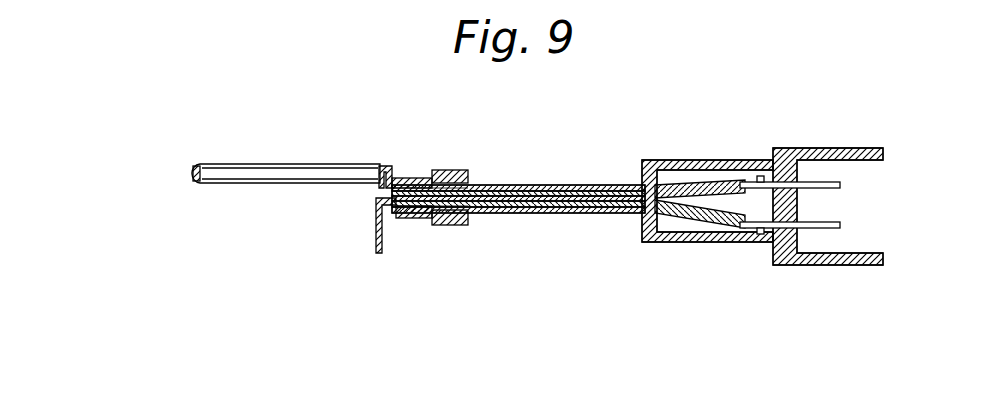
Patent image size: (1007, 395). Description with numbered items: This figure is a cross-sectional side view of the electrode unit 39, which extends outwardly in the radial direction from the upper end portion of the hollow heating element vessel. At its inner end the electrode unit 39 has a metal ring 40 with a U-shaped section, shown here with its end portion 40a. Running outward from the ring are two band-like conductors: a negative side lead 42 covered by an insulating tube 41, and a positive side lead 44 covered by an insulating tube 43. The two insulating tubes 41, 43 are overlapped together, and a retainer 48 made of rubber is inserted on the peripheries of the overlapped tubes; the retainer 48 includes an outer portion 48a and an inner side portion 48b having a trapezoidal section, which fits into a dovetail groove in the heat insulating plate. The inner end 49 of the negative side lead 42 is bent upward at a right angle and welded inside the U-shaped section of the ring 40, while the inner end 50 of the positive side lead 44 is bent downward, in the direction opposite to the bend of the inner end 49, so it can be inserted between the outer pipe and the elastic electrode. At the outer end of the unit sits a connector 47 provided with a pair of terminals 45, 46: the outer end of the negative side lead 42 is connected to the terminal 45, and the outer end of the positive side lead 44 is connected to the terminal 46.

The electrode unit 39 is at (586, 179).
The metal ring 40 is at (233, 170).
The tube end cap 40a is at (190, 171).
The insulating tube 41 is at (528, 185).
The negative side lead 42 is at (492, 188).
The insulating tube 43 is at (548, 213).
The positive side lead 44 is at (503, 206).
The terminal 45 is at (840, 185).
The terminal 46 is at (840, 225).
The connector 47 is at (790, 148).
The retainer 48 is at (460, 242).
The clamp flange 48a is at (456, 170).
The inner side portion of the retainer 48b is at (420, 178).
The inner end of the negative side lead 49 is at (380, 191).
The inner end of the positive side lead 50 is at (376, 244).